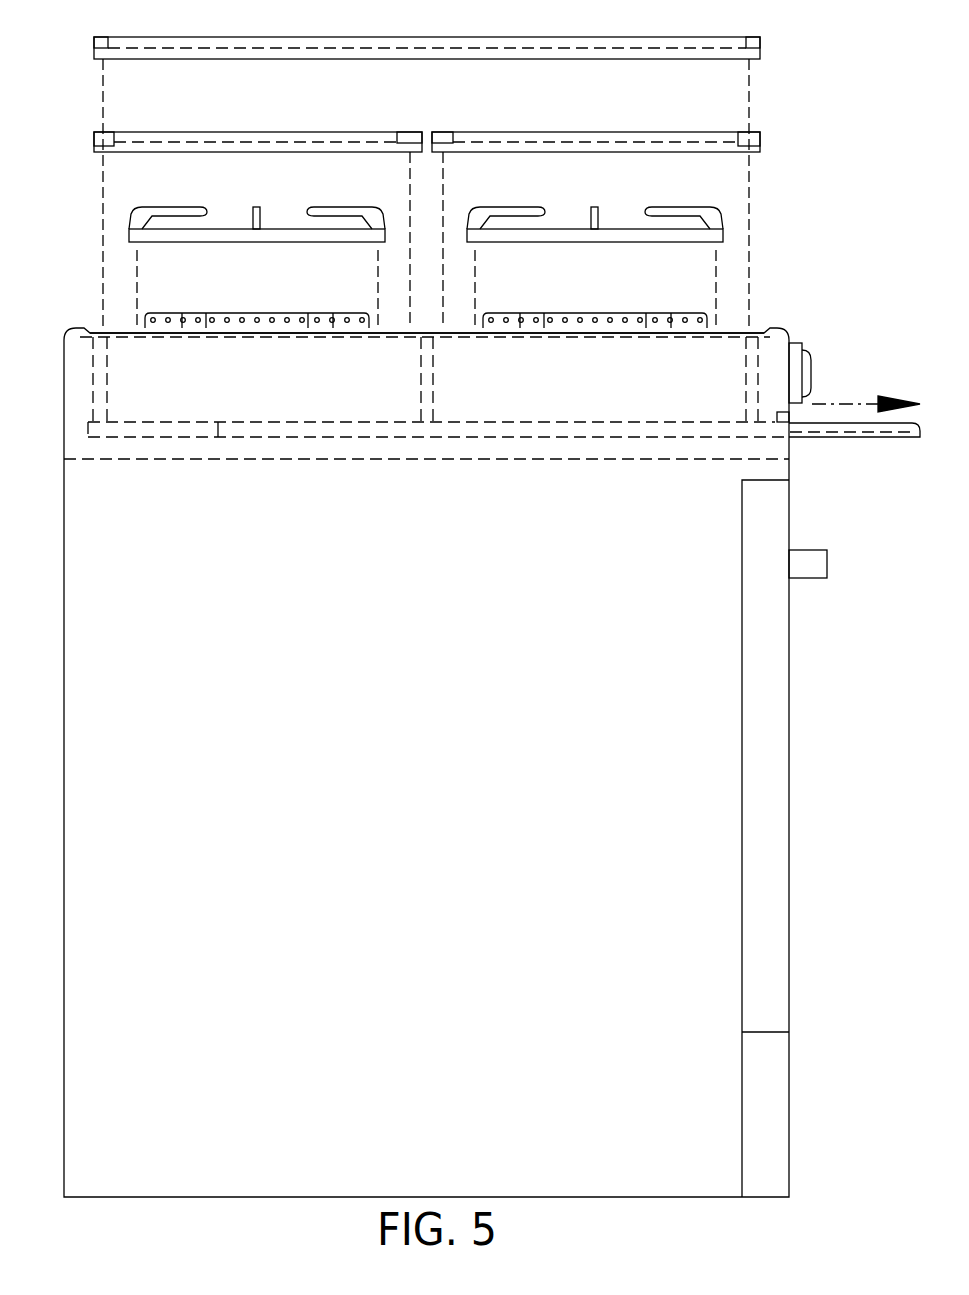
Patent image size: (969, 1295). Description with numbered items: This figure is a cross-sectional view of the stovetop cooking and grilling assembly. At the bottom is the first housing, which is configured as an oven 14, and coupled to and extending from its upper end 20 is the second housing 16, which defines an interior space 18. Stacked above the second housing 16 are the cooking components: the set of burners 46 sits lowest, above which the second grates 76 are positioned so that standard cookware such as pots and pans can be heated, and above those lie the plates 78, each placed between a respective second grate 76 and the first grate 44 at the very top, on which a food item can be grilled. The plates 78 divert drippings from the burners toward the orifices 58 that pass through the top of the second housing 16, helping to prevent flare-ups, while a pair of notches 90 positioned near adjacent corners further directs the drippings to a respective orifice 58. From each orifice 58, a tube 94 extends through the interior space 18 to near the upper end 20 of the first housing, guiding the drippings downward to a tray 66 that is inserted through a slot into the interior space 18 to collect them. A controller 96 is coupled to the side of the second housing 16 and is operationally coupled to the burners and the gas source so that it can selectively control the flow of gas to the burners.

The oven 14 is at (157, 917).
The second housing 16 is at (63, 370).
The interior space 18 is at (157, 393).
The upper end 20 is at (173, 462).
The first grate 44 is at (765, 48).
The set of burners 46 is at (515, 313).
The orifices 58 is at (95, 320).
The tray 66 is at (869, 438).
The second grate 76 is at (507, 207).
The plate 78 is at (507, 128).
The notch 90 is at (456, 146).
The tube 94 is at (92, 358).
The controller 96 is at (812, 347).